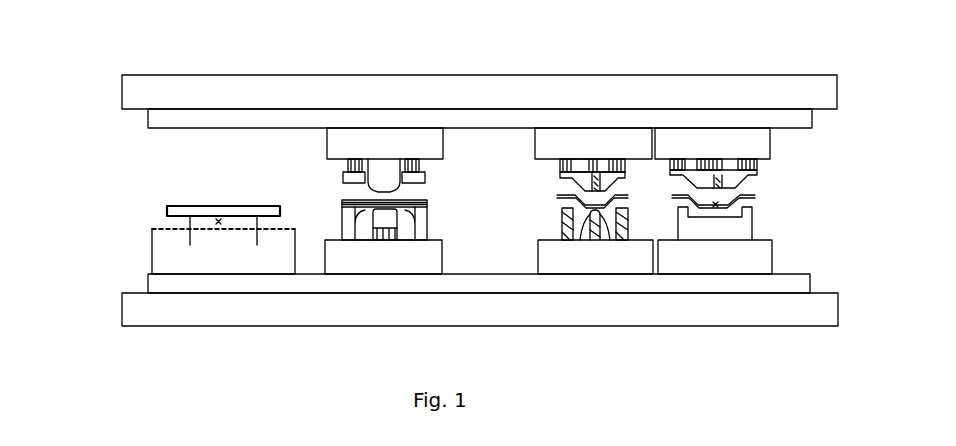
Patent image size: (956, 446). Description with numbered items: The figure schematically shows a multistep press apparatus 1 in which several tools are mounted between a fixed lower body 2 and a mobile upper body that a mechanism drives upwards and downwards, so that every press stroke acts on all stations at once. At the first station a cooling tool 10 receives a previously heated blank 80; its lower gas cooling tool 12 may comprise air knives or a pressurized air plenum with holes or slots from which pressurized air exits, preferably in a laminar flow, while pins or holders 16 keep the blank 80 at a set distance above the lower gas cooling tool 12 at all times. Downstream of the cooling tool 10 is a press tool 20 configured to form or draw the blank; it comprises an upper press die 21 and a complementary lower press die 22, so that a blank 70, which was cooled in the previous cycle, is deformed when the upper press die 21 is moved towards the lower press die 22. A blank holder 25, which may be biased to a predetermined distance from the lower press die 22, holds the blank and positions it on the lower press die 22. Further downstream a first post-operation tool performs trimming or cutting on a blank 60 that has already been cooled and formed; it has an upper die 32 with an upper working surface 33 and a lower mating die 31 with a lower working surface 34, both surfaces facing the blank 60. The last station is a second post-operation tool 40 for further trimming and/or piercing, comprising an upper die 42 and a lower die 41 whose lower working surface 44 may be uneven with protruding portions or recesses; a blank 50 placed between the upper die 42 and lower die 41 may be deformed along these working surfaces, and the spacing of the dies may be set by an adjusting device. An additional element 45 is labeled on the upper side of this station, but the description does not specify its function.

The multistep press apparatus 1 is at (136, 93).
The fixed lower body 2 is at (160, 312).
The cooling tool 10 is at (182, 256).
The lower gas cooling tool 12 is at (150, 255).
The pins or holders 16 is at (290, 229).
The blank 80 is at (167, 210).
The press tool 20 is at (377, 201).
The upper press die 21 is at (380, 170).
The lower press die 22 is at (378, 217).
The blank holder 25 is at (423, 173).
The blank 70 is at (342, 204).
The lower die 31 is at (566, 160).
The upper die 32 is at (560, 214).
The upper working surface 33 is at (588, 162).
The lower working surface 34 is at (597, 237).
The blank 60 is at (558, 197).
The second post-operation tool 40 is at (748, 201).
The lower die 41 is at (720, 162).
The upper die 42 is at (745, 230).
The lower working surface 44 is at (704, 207).
The punch of third unit 45 is at (689, 162).
The blank 50 is at (673, 197).